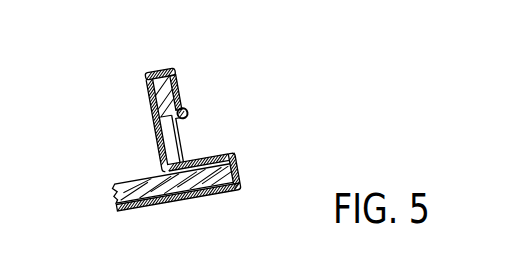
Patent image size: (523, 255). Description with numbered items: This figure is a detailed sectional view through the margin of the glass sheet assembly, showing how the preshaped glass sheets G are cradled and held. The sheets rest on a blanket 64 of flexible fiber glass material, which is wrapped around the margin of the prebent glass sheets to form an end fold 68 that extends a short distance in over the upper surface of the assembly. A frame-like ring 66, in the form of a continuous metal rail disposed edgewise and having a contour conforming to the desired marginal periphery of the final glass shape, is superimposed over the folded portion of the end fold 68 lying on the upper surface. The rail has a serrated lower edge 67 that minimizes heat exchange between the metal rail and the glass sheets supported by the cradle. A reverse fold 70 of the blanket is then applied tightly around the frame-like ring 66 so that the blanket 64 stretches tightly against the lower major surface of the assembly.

The reverse fold 70 is at (161, 70).
The frame-like ring 66 is at (191, 115).
The serrated lower edge 67 is at (180, 145).
The end fold 68 is at (237, 162).
The blanket 64 is at (143, 212).
The gap G is at (128, 178).